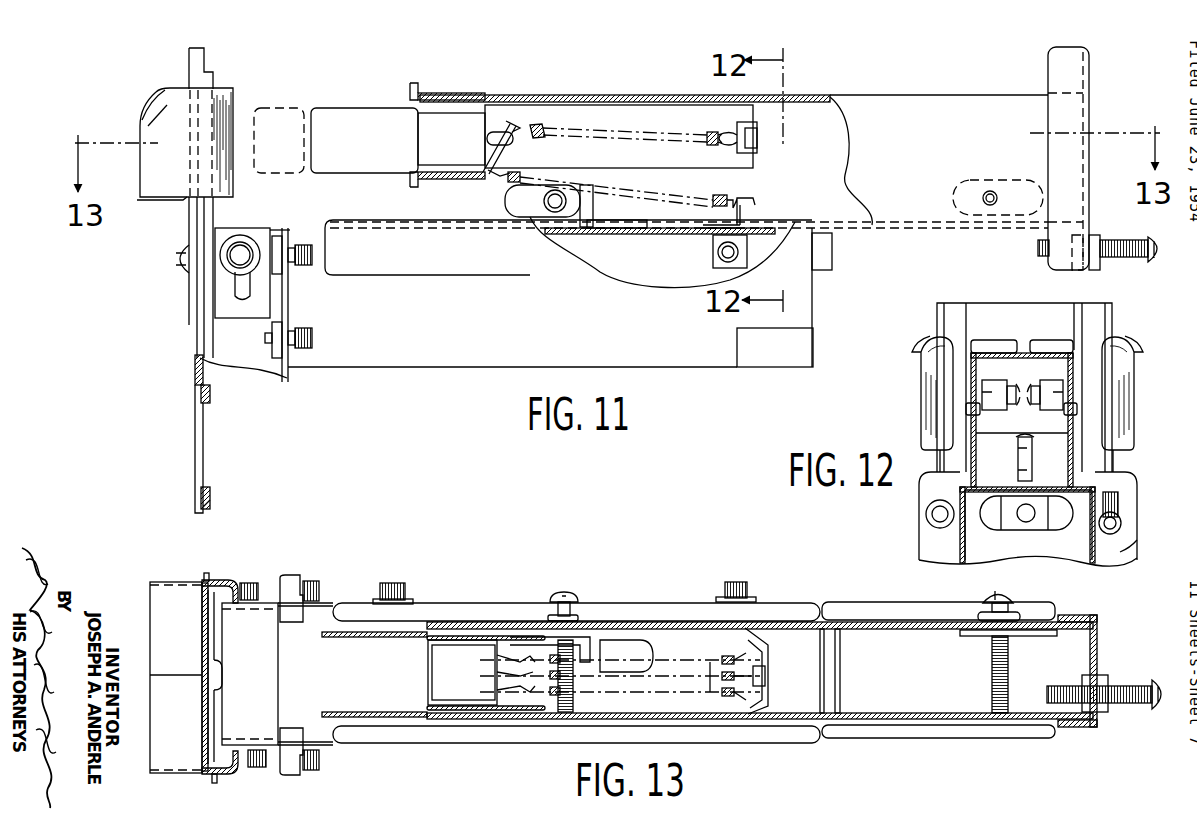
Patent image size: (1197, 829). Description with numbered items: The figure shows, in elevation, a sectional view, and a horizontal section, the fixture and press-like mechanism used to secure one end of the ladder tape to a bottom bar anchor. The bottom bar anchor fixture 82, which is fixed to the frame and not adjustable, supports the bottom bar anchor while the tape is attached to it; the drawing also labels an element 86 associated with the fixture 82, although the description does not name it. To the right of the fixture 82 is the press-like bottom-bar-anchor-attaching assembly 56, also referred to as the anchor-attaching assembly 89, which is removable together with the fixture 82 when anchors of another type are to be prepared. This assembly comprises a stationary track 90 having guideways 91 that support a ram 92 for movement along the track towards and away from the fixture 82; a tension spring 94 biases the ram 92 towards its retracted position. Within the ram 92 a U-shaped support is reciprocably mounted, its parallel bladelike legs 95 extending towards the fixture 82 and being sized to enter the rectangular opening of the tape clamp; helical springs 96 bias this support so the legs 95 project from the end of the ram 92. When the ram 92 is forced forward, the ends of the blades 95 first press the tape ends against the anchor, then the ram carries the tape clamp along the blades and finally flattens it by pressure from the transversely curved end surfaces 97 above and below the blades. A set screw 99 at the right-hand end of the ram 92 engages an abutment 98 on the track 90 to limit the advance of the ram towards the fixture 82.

In FIG. 11, the bottom-bar-anchor-attaching assembly 56 is at (526, 92).
In FIG. 13, the bottom-bar-anchor-attaching assembly 56 is at (427, 592).
In FIG. 11, the bottom bar anchor fixture 82 is at (215, 57).
In FIG. 12, the bottom bar anchor fixture 82 is at (1114, 318).
In FIG. 13, the bottom bar anchor fixture 82 is at (191, 572).
In FIG. 11, the guide block 86 is at (206, 126).
In FIG. 12, the guide block 86 is at (940, 386).
In FIG. 13, the guide block 86 is at (160, 581).
In FIG. 11, the anchor-attaching assembly 89 is at (594, 54).
In FIG. 12, the anchor-attaching assembly 89 is at (1086, 426).
In FIG. 13, the anchor-attaching assembly 89 is at (546, 538).
In FIG. 11, the stationary track 90 is at (384, 346).
In FIG. 12, the stationary track 90 is at (1132, 542).
In FIG. 13, the stationary track 90 is at (317, 622).
In FIG. 11, the guideways 91 is at (330, 220).
In FIG. 12, the guideways 91 is at (960, 482).
In FIG. 13, the guideways 91 is at (356, 606).
In FIG. 11, the ram 92 is at (884, 104).
In FIG. 12, the ram 92 is at (1022, 352).
In FIG. 13, the ram 92 is at (851, 621).
In FIG. 11, the tension spring 94 is at (727, 186).
In FIG. 13, the tension spring 94 is at (694, 678).
In FIG. 11, the bladelike legs 95 is at (360, 118).
In FIG. 13, the bladelike legs 95 is at (351, 712).
In FIG. 11, the helical springs 96 is at (673, 126).
In FIG. 13, the helical springs 96 is at (684, 686).
In FIG. 11, the transversely curved end surfaces 97 is at (411, 85).
In FIG. 12, the transversely curved end surfaces 97 is at (997, 340).
In FIG. 13, the transversely curved end surfaces 97 is at (428, 642).
In FIG. 11, the abutment 98 is at (830, 262).
In FIG. 11, the set screw 99 is at (1128, 258).
In FIG. 13, the set screw 99 is at (1131, 681).